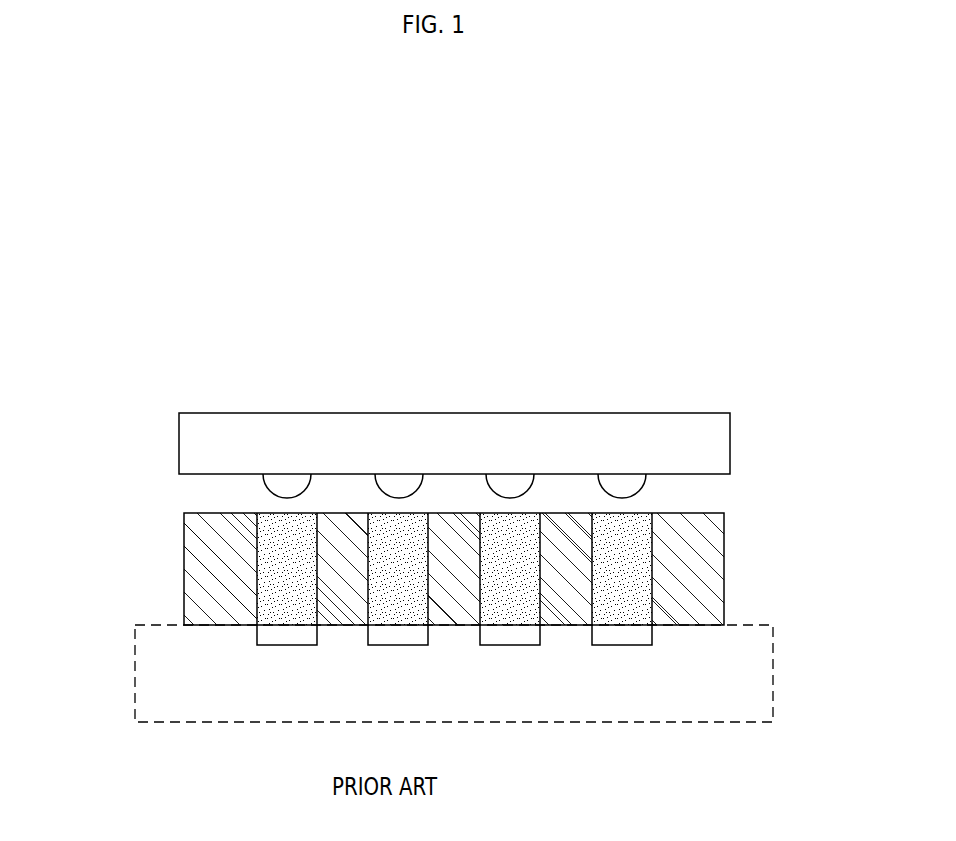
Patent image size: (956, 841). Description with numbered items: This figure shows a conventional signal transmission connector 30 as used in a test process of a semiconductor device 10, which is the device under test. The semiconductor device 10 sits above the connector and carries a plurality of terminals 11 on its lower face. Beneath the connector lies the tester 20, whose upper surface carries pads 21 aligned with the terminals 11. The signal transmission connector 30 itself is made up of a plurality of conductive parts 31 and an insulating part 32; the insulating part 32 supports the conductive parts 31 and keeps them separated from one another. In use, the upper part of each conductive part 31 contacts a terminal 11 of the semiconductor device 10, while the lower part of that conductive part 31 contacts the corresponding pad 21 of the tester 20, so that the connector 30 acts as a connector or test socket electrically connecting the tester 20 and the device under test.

The semiconductor device 10 is at (530, 368).
The terminal 11 is at (292, 486).
The tester 20 is at (108, 658).
The pad 21 is at (630, 635).
The signal transmission connector 30 is at (158, 546).
The conductive part 31 is at (625, 597).
The insulating part 32 is at (717, 533).